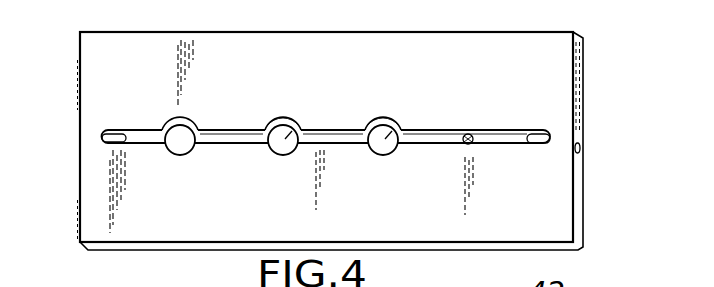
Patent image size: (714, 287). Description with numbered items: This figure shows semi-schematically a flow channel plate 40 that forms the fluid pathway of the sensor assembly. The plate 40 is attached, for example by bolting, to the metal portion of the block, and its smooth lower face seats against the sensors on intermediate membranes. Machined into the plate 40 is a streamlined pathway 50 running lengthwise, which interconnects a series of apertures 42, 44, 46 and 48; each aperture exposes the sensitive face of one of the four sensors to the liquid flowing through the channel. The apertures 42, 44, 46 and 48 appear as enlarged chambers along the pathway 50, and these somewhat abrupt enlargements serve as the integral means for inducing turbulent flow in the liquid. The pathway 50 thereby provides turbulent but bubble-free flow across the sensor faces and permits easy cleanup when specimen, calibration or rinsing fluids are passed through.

The plate 40 is at (583, 180).
The aperture 42 is at (485, 128).
The aperture 44 is at (395, 128).
The aperture 46 is at (298, 128).
The aperture 48 is at (178, 143).
The machined pathway 50 is at (507, 140).